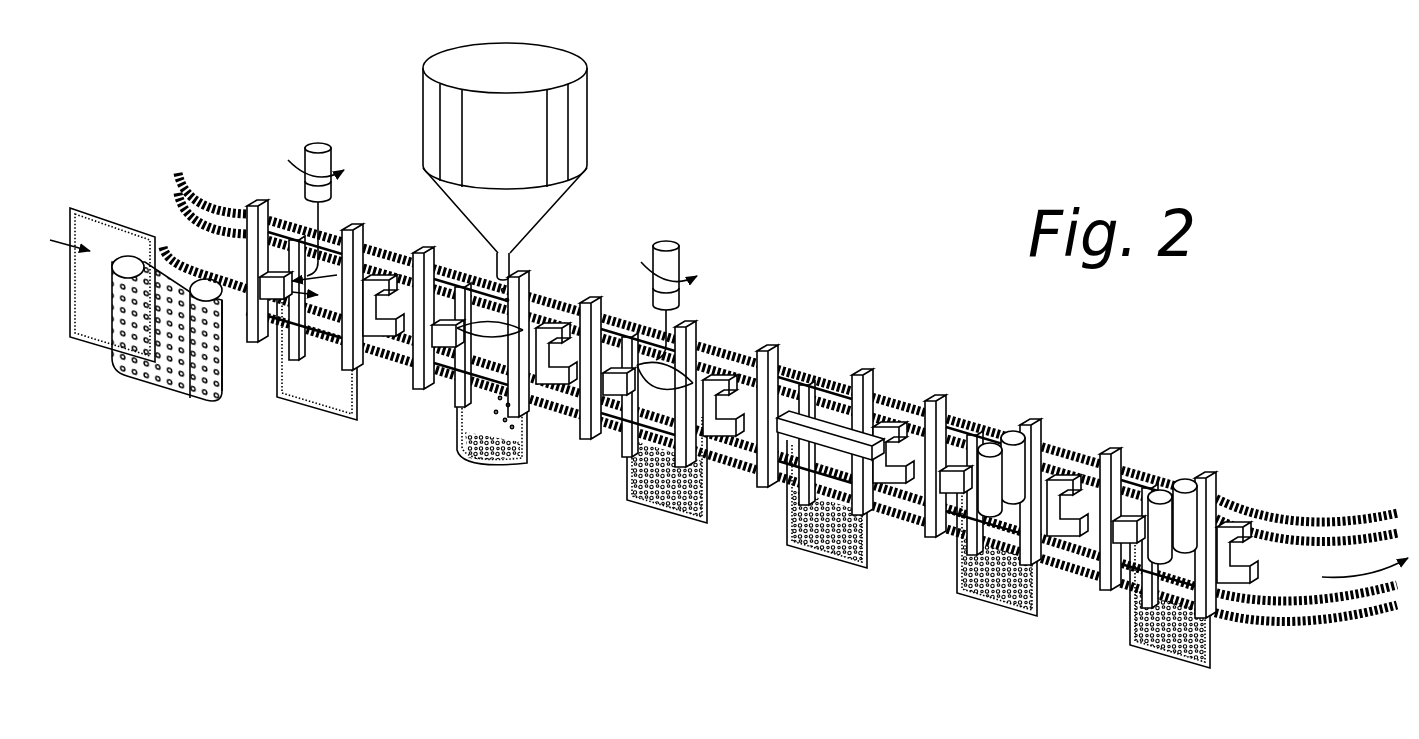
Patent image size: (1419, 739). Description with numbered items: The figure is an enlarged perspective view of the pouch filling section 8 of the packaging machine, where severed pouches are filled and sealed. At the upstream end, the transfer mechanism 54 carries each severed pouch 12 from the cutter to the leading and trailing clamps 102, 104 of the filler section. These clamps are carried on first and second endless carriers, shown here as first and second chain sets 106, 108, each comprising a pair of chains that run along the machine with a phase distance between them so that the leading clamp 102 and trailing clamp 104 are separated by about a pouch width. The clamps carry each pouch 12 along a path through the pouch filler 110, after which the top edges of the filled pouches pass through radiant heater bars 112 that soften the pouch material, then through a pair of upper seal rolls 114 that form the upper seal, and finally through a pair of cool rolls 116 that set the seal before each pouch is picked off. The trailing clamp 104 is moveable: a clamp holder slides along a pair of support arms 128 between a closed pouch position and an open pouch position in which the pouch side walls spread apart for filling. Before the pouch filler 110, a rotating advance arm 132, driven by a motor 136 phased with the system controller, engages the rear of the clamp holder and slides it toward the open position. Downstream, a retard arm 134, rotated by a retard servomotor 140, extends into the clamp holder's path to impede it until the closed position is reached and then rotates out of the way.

The pouch filling section 8 is at (729, 344).
The pouch 12 is at (95, 231).
The transfer mechanism 54 is at (160, 376).
The leading clamp 102 is at (386, 330).
The trailing clamp 104 is at (258, 345).
The first chain set 106 is at (1323, 598).
The second chain set 108 is at (1285, 508).
The pouch filler 110 is at (562, 136).
The radiant heater bars 112 is at (782, 445).
The upper seal rolls 114 is at (1013, 440).
The cool rolls 116 is at (1185, 483).
The support arms 128 is at (613, 423).
The advance arm 132 is at (313, 284).
The retard arm 134 is at (660, 320).
The motor 136 is at (307, 161).
The retard servomotor 140 is at (680, 265).